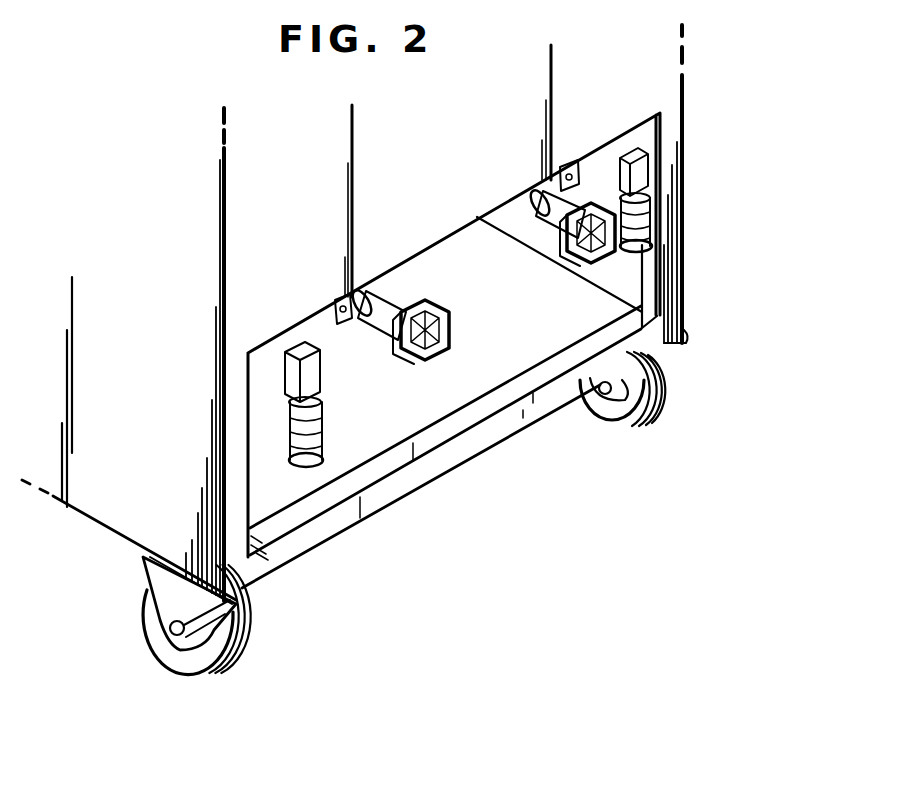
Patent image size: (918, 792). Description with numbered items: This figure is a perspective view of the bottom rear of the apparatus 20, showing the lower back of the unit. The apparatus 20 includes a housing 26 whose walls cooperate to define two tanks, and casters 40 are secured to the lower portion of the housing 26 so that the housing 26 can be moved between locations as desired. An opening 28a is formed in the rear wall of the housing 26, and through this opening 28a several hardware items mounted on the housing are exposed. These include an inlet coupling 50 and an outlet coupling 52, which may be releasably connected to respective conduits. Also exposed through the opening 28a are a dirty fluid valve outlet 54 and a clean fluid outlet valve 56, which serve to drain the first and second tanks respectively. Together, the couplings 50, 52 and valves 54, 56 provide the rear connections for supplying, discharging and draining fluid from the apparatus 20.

The apparatus 20 is at (84, 552).
The housing 26 is at (688, 157).
The opening 28a is at (421, 242).
The casters 40 is at (252, 651).
The inlet coupling 50 is at (655, 226).
The outlet coupling 52 is at (325, 437).
The dirty fluid valve outlet 54 is at (551, 272).
The clean fluid outlet valve 56 is at (452, 336).